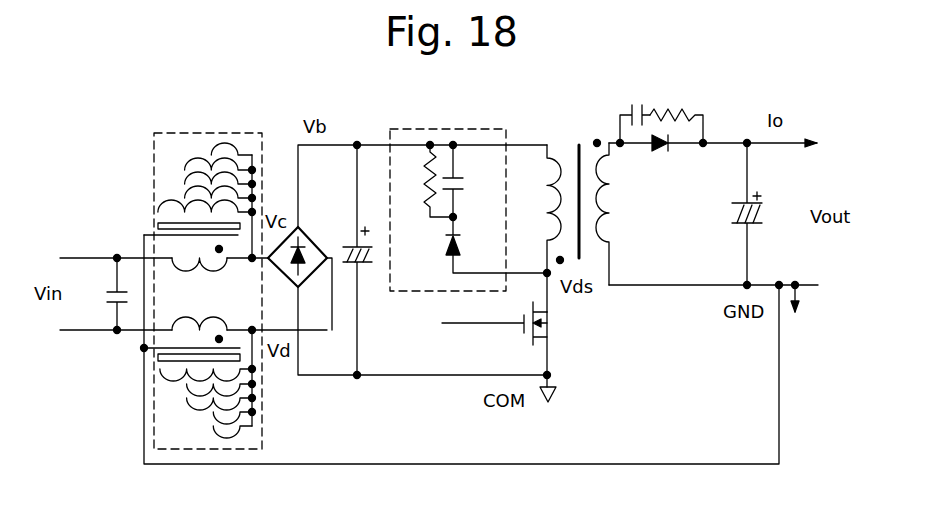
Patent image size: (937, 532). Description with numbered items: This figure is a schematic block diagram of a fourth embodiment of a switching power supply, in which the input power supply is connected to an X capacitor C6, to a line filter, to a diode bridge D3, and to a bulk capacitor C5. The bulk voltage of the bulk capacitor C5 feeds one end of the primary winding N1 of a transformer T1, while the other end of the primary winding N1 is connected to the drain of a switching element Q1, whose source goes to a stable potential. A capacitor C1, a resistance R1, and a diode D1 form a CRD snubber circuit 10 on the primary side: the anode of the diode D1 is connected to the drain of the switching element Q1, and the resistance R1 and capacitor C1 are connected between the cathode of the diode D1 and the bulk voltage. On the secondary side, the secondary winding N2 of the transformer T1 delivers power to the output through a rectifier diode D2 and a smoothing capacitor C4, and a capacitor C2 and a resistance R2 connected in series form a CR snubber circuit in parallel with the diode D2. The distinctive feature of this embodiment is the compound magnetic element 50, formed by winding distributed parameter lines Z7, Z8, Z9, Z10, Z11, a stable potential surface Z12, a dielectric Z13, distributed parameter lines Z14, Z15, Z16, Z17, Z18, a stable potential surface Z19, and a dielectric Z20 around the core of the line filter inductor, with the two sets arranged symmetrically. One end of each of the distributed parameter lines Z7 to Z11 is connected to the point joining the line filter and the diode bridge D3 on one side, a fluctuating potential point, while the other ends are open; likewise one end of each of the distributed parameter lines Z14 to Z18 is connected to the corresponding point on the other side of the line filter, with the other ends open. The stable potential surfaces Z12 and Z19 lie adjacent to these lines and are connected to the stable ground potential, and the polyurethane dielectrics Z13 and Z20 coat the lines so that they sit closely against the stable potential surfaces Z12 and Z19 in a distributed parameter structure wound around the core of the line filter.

The compound magnetic element 50 is at (207, 118).
The CRD snubber circuit 10 is at (460, 116).
The distributed parameter line Z7 is at (182, 107).
The distributed parameter line Z8 is at (184, 127).
The distributed parameter line Z9 is at (184, 144).
The distributed parameter line Z10 is at (184, 168).
The distributed parameter line Z11 is at (184, 186).
The stable potential surface Z12 is at (156, 247).
The dielectric Z13 is at (170, 212).
The distributed parameter line Z14 is at (178, 392).
The distributed parameter line Z15 is at (178, 412).
The distributed parameter line Z16 is at (178, 431).
The distributed parameter line Z17 is at (178, 450).
The distributed parameter line Z18 is at (176, 471).
The stable potential surface Z19 is at (151, 338).
The dielectric Z20 is at (161, 368).
The capacitor C1 is at (470, 183).
The resistance R1 is at (426, 181).
The diode D1 is at (479, 245).
The diode bridge D3 is at (303, 249).
The bulk capacitor C5 is at (363, 260).
The X capacitor C6 is at (74, 301).
The transformer T1 is at (578, 211).
The primary winding N1 is at (542, 228).
The secondary winding N2 is at (615, 213).
The switching element Q1 is at (494, 322).
The diode D2 is at (678, 158).
The capacitor C2 is at (635, 110).
The resistance R2 is at (676, 110).
The capacitor C4 is at (756, 214).